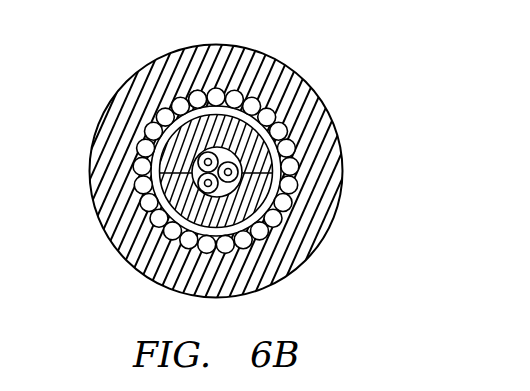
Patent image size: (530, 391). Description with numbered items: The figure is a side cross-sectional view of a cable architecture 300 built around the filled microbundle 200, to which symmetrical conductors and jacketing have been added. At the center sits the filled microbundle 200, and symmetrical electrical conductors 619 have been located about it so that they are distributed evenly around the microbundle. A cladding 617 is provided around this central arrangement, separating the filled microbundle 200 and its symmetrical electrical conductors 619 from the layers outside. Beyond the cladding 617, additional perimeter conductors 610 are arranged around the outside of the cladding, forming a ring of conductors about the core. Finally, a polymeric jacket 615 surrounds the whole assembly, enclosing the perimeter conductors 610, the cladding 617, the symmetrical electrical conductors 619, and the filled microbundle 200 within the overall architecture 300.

The cable 300 is at (356, 52).
The perimeter conductors 610 is at (200, 97).
The polymeric jacket 615 is at (327, 157).
The cladding 617 is at (267, 197).
The symmetrical electrical conductors 619 is at (262, 224).
The filled microbundle 200 is at (193, 183).